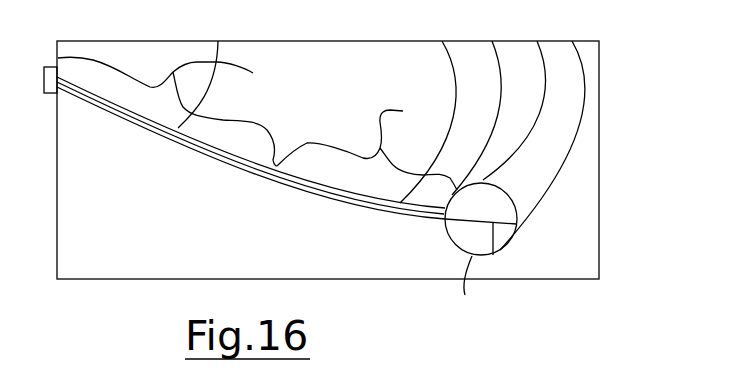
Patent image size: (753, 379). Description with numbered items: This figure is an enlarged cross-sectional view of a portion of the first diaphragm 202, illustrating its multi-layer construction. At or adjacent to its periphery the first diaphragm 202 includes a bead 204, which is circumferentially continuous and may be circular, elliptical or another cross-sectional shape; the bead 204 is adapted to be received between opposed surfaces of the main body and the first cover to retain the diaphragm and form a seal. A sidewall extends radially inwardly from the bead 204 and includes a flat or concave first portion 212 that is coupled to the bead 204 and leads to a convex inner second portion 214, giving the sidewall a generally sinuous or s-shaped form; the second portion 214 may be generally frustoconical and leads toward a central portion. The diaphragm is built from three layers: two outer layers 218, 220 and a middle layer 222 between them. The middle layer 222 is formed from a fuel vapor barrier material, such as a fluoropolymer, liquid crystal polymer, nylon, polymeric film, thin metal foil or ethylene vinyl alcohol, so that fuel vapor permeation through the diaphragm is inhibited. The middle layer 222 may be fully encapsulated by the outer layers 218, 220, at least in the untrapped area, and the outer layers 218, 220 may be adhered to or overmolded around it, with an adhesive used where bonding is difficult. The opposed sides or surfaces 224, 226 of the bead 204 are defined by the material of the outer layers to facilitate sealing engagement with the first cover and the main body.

The first diaphragm 202 is at (620, 44).
The bead 204 is at (483, 180).
The first portion 212 is at (450, 122).
The second portion 214 is at (257, 115).
The outer layer 218 is at (487, 205).
The outer layer 220 is at (463, 235).
The middle layer 222 is at (493, 255).
The side of the bead 224 is at (483, 180).
The side of the bead 226 is at (465, 295).